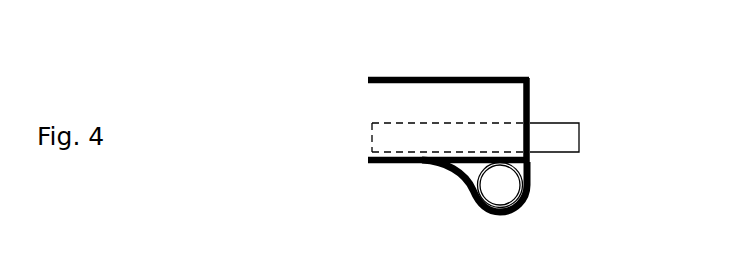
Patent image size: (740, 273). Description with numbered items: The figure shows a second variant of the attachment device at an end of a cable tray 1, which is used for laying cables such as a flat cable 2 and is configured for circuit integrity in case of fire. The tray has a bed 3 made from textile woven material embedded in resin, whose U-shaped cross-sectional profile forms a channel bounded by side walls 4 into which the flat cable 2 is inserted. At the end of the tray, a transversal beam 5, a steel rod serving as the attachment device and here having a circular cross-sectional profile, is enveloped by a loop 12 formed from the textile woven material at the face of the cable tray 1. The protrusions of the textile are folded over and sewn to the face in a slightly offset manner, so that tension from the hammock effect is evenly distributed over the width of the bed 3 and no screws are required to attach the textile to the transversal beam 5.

The cable tray 1 is at (535, 54).
The flat cable 2 is at (561, 134).
The bed 3 is at (375, 165).
The side walls 4 is at (419, 77).
The transversal beam 5 is at (513, 183).
The loop 12 is at (523, 200).